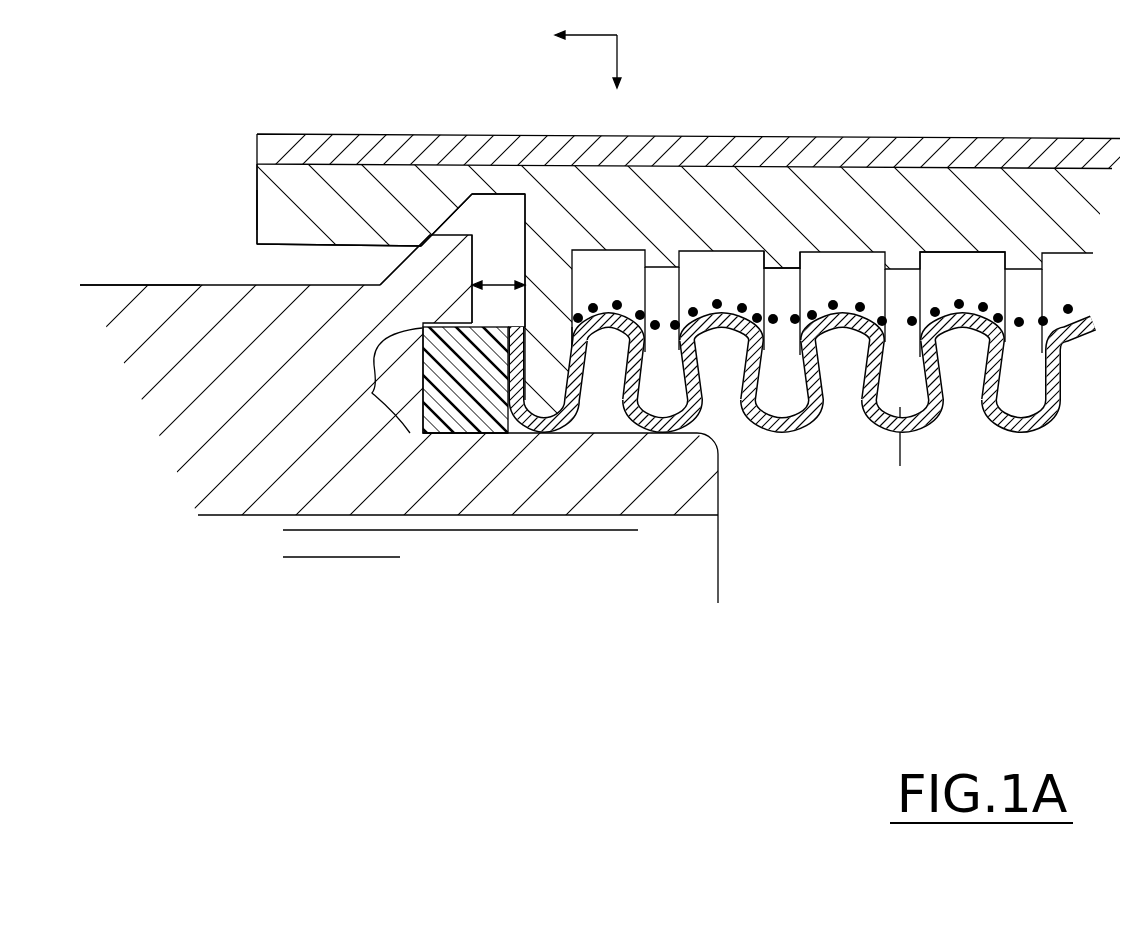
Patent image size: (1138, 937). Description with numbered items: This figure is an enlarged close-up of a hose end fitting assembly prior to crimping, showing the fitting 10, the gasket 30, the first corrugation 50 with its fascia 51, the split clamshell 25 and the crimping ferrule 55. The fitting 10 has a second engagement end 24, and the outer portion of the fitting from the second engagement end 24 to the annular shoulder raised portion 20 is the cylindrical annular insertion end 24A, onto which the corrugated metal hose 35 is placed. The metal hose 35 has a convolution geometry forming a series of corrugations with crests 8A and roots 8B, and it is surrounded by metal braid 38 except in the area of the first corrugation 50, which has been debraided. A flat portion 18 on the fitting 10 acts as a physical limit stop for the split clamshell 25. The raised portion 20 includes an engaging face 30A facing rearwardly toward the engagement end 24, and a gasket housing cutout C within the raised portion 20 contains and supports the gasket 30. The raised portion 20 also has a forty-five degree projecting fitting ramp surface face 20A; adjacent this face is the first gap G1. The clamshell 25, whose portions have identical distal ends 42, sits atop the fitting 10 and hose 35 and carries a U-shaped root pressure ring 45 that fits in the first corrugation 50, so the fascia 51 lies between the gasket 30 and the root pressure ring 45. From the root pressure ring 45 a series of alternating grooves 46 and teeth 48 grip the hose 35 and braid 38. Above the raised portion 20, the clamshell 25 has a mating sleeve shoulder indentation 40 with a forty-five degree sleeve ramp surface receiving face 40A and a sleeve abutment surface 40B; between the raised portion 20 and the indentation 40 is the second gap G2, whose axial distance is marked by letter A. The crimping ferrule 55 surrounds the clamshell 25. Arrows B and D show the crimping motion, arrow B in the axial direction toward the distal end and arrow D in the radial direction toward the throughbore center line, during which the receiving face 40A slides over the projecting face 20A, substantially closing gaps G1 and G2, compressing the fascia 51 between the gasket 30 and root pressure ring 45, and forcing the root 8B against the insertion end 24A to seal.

The fitting 10 is at (119, 280).
The flat portion 18 is at (162, 283).
The annular shoulder raised portion 20 is at (445, 265).
The projecting fitting ramp surface face 20A is at (422, 327).
The second engagement end 24 is at (720, 506).
The cylindrical annular insertion end 24A is at (706, 425).
The split clamshell 25 is at (250, 209).
The gasket 30 is at (256, 164).
The engaging face 30A is at (556, 302).
The metal hose 35 is at (1056, 416).
The metal braid 38 is at (1063, 308).
The mating sleeve shoulder indentation 40 is at (515, 210).
The sleeve ramp surface receiving face 40A is at (500, 193).
The sleeve abutment surface 40B is at (512, 198).
The distal end 42 is at (256, 181).
The root pressure ring 45 is at (580, 301).
The grooves 46 is at (942, 251).
The teeth 48 is at (782, 264).
The first corrugation 50 is at (516, 436).
The fascia 51 is at (496, 436).
The crimping ferrule 55 is at (757, 137).
The crests 8A is at (846, 315).
The roots 8B is at (586, 401).
The first gap G1 is at (290, 265).
The second gap G2 is at (506, 260).
The axial distance A is at (498, 276).
The arrow B is at (586, 21).
The gasket housing cutout C is at (373, 392).
The arrow D is at (621, 41).